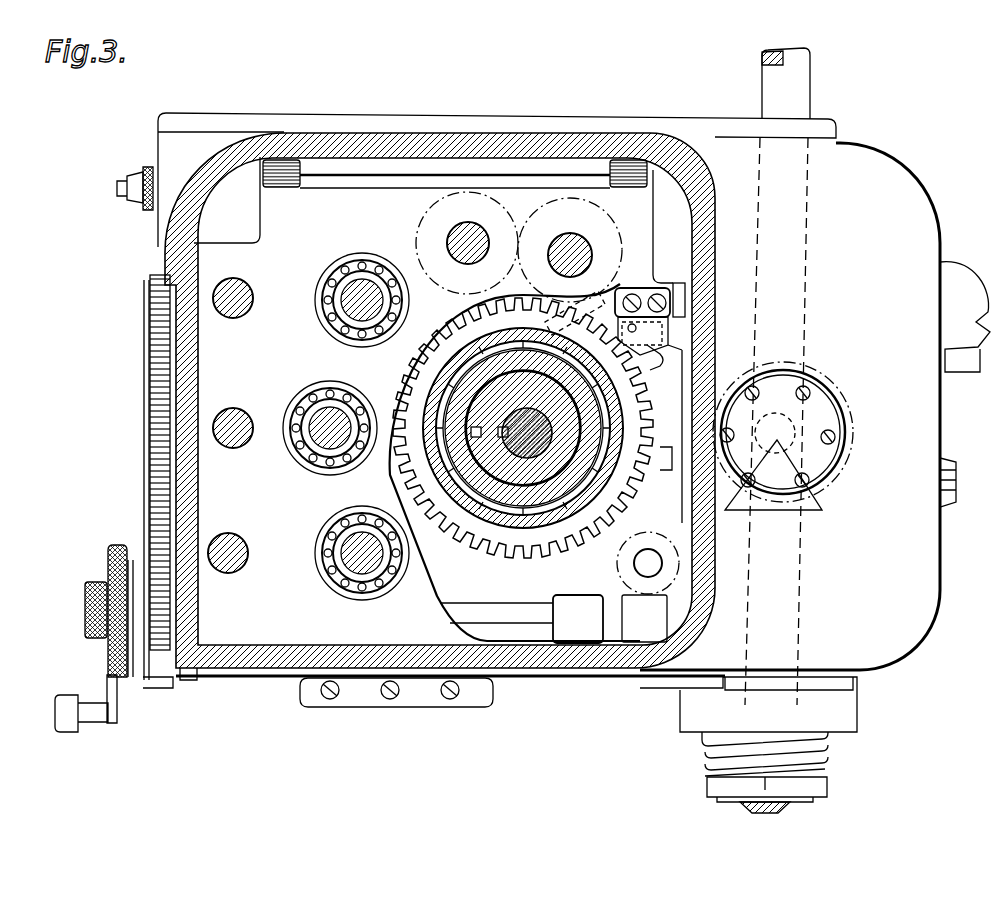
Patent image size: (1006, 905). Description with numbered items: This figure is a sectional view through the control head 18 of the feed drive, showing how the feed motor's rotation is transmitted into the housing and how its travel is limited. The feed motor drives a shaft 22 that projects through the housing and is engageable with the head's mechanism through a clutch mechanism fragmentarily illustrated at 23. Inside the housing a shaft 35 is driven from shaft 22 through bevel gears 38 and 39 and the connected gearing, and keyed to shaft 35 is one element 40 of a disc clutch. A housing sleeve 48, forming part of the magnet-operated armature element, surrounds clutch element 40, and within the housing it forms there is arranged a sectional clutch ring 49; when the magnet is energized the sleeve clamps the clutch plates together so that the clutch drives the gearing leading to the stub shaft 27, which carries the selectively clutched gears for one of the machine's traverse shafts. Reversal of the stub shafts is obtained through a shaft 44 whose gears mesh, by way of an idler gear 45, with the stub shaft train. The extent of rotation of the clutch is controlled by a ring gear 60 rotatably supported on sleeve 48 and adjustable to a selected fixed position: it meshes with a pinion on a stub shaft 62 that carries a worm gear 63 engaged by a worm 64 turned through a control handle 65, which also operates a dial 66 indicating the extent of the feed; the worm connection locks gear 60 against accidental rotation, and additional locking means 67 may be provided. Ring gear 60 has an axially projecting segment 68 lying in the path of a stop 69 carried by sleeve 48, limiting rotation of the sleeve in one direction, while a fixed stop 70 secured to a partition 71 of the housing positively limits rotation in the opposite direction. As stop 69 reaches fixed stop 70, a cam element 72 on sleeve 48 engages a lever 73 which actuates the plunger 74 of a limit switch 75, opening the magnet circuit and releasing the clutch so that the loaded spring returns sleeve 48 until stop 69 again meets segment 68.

The control head 18 is at (890, 173).
The shaft 22 is at (800, 565).
The clutch mechanism 23 is at (706, 785).
The stub shaft 27 is at (323, 425).
The shaft 35 is at (523, 450).
The bevel gear 38 is at (837, 387).
The bevel gear 39 is at (813, 503).
The disc clutch element 40 is at (548, 474).
The shaft 44 is at (555, 243).
The idler gear 45 is at (604, 225).
The housing sleeve 48 is at (477, 357).
The sectional clutch ring 49 is at (488, 493).
The ring gear 60 is at (405, 403).
The stub shaft 62 is at (652, 565).
The worm gear 63 is at (619, 575).
The worm 64 is at (617, 613).
The control handle 65 is at (110, 712).
The dial 66 is at (168, 372).
The locking means 67 is at (100, 582).
The axially projecting segment 68 is at (668, 470).
The stop 69 is at (590, 310).
The fixed stop 70 is at (642, 287).
The partition 71 is at (687, 347).
The cam element 72 is at (653, 360).
The lever 73 is at (685, 309).
The plunger 74 is at (680, 283).
The limit switch 75 is at (700, 212).